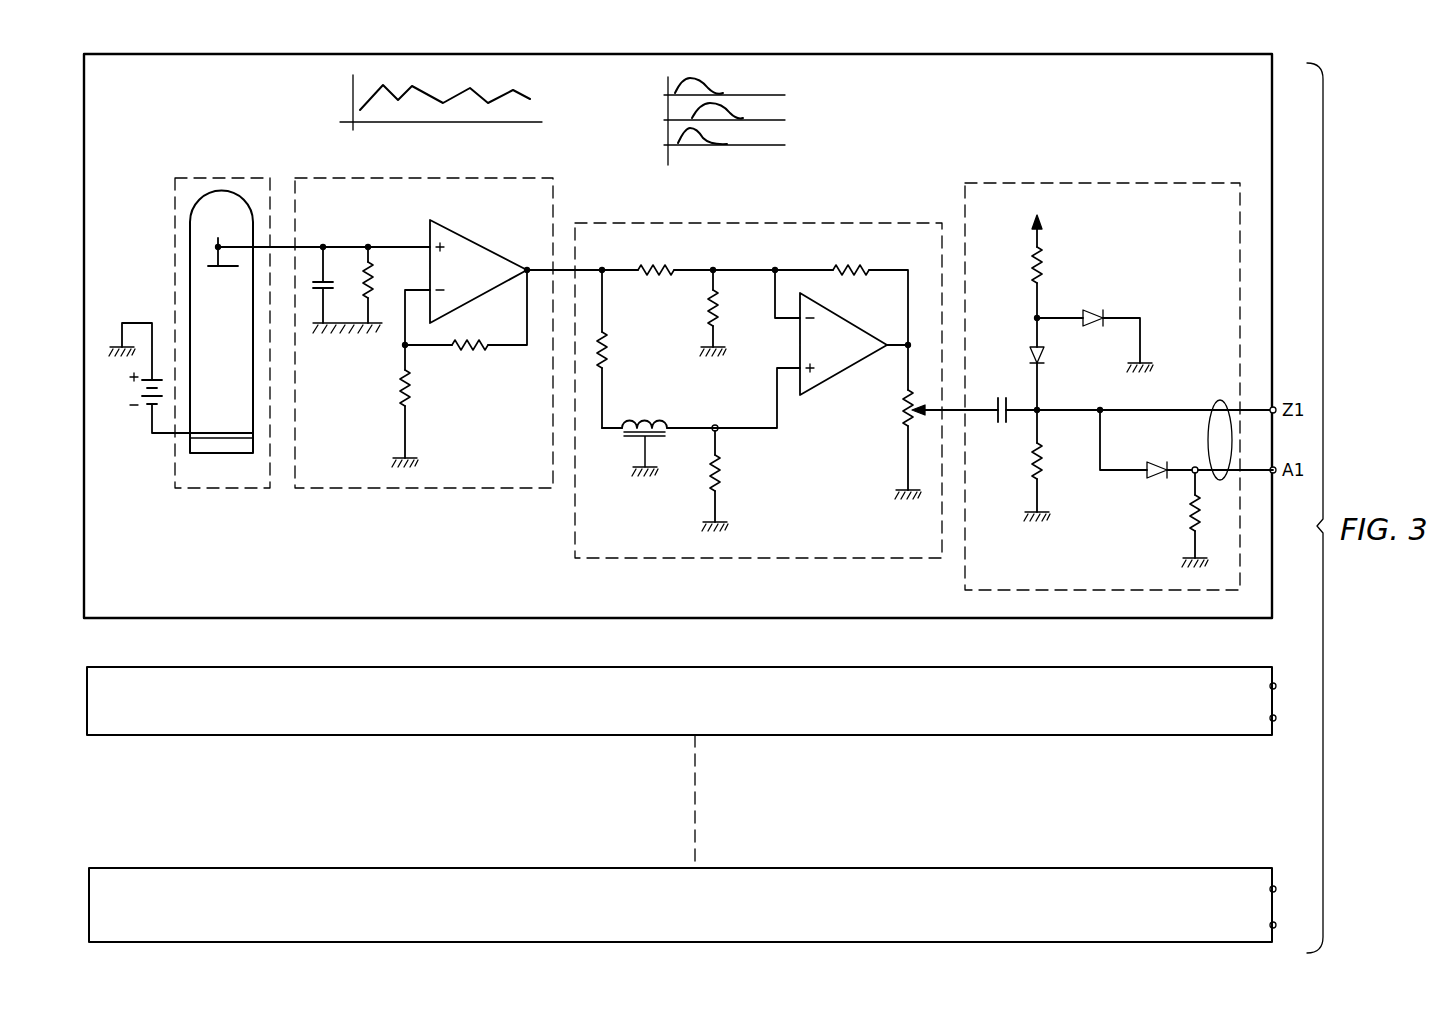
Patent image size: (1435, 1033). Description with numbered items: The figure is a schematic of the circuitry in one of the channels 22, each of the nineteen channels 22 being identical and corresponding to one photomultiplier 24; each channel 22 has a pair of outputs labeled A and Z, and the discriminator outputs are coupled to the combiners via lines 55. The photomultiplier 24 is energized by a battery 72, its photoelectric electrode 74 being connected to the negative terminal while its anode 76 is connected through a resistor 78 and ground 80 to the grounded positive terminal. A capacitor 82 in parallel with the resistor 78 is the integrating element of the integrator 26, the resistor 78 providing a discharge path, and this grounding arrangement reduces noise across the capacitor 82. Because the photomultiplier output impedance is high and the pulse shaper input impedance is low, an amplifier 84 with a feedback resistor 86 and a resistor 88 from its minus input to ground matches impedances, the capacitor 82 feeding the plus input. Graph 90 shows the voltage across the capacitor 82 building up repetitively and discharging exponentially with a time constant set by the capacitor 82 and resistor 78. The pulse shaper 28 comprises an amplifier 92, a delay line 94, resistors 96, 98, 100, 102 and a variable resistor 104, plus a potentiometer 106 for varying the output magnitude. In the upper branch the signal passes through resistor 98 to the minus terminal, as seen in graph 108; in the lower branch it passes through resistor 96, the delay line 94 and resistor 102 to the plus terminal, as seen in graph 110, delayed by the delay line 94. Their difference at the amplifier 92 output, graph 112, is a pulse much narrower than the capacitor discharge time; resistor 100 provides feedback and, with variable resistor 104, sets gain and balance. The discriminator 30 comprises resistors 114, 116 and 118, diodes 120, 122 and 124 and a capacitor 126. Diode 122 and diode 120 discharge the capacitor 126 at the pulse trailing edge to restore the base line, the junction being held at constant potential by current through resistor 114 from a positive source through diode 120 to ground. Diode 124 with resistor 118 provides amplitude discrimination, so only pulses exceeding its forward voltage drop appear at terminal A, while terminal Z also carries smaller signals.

The channel 22 is at (402, 620).
The photomultiplier 24 is at (211, 491).
The integrator 26 is at (356, 494).
The pulse shaper 28 is at (832, 222).
The discriminator 30 is at (1181, 179).
The lines 55 is at (1220, 400).
The battery 72 is at (142, 400).
The photoelectric electrode 74 is at (225, 440).
The anode 76 is at (207, 268).
The resistor 78 is at (376, 285).
The ground 80 is at (359, 334).
The capacitor 82 is at (327, 281).
The amplifier 84 is at (484, 252).
The resistor 86 is at (480, 351).
The resistor 88 is at (410, 390).
The graph 90 is at (436, 91).
The amplifier 92 is at (855, 331).
The delay line 94 is at (650, 424).
The resistor 96 is at (606, 354).
The resistor 98 is at (665, 276).
The resistor 100 is at (867, 268).
The resistor 102 is at (721, 483).
The variable resistor 104 is at (719, 318).
The potentiometer 106 is at (900, 410).
The graph 108 is at (725, 82).
The graph 110 is at (745, 111).
The graph 112 is at (727, 137).
The resistor 114 is at (1044, 272).
The resistor 116 is at (1044, 466).
The resistor 118 is at (1188, 515).
The diode 120 is at (1093, 312).
The diode 122 is at (1032, 353).
The diode 124 is at (1161, 460).
The capacitor 126 is at (999, 420).